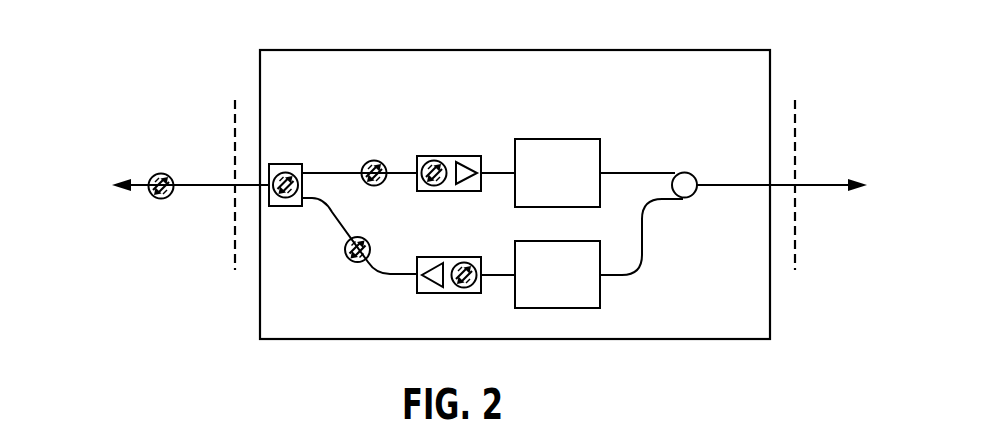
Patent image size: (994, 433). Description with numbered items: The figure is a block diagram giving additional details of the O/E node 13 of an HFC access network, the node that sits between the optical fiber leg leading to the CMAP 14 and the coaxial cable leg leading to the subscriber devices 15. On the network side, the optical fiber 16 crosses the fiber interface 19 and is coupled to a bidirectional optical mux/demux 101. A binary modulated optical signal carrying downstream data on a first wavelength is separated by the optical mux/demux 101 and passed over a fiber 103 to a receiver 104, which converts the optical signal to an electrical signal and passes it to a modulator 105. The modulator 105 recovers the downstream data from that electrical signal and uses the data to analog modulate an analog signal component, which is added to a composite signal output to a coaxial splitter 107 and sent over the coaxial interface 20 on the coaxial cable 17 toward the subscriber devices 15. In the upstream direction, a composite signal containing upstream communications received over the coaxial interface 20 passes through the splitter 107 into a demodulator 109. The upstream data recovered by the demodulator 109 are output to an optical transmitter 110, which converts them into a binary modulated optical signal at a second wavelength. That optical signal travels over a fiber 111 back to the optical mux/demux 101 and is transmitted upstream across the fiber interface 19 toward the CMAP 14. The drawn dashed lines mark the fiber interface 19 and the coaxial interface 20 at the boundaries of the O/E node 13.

The O/E node 13 is at (316, 50).
The CMAP 14 is at (67, 187).
The subscriber devices 15 is at (912, 200).
The optical fiber 16 is at (216, 185).
The coaxial cable 17 is at (810, 185).
The fiber interface 19 is at (235, 247).
The coaxial interface 20 is at (795, 247).
The optical mux/demux 101 is at (278, 206).
The fiber 103 is at (307, 173).
The receiver 104 is at (425, 156).
The modulator 105 is at (530, 139).
The coaxial splitter 107 is at (688, 173).
The demodulator 109 is at (519, 241).
The optical transmitter 110 is at (449, 257).
The fiber 111 is at (337, 211).